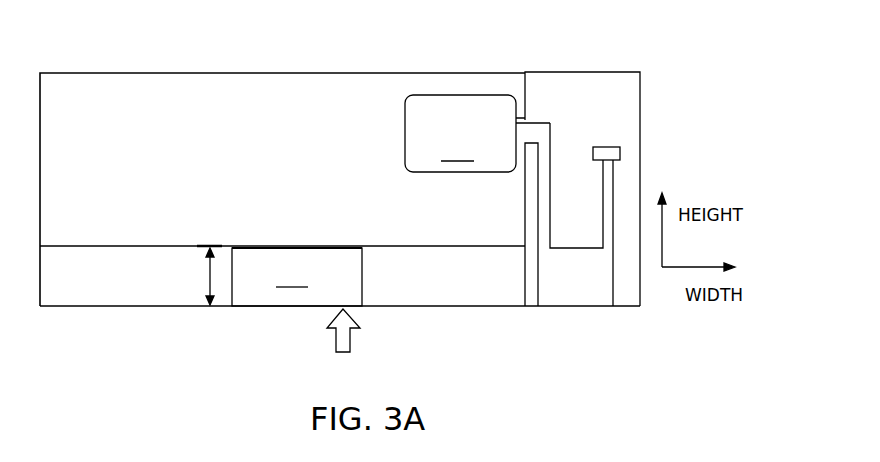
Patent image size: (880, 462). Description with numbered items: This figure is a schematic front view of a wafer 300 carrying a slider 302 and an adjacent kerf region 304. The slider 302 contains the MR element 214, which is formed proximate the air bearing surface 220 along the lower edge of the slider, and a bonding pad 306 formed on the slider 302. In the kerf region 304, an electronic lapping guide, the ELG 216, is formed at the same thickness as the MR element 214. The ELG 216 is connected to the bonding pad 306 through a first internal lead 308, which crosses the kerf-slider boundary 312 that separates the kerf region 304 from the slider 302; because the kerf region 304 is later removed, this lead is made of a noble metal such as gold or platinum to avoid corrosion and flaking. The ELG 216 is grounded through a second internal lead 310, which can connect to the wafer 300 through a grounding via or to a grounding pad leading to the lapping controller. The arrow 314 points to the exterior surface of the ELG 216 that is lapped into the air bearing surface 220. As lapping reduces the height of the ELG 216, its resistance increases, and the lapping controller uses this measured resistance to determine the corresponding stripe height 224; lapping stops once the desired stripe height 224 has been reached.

The wafer 300 is at (406, 62).
The slider 302 is at (227, 73).
The kerf region 304 is at (563, 72).
The bonding pad 306 is at (460, 133).
The first internal lead 308 is at (546, 122).
The second internal lead 310 is at (618, 146).
The kerf-slider boundary 312 is at (526, 306).
The ELG 216 is at (571, 248).
The MR element 214 is at (297, 277).
The air bearing surface 220 is at (157, 315).
The stripe height 224 is at (209, 279).
The arrow 314 is at (334, 336).